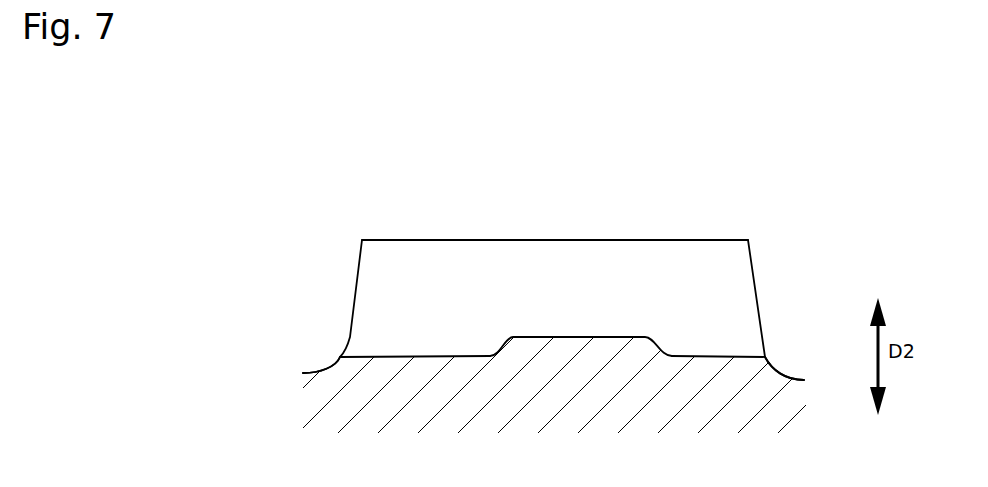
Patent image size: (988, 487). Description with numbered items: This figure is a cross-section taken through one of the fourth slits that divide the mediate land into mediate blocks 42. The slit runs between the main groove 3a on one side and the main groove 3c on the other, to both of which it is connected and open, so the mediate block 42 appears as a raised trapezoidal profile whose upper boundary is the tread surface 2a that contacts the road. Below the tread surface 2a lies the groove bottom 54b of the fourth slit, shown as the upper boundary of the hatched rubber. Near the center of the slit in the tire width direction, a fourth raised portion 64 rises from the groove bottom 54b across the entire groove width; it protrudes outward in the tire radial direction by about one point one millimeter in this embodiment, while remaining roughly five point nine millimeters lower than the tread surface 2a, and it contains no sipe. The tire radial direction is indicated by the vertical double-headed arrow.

The tread surface 2a is at (398, 240).
The main groove 3a is at (322, 260).
The main groove 3c is at (798, 274).
The mediate block 42 is at (519, 232).
The groove bottom 54b is at (380, 357).
The fourth raised portion 64 is at (587, 328).